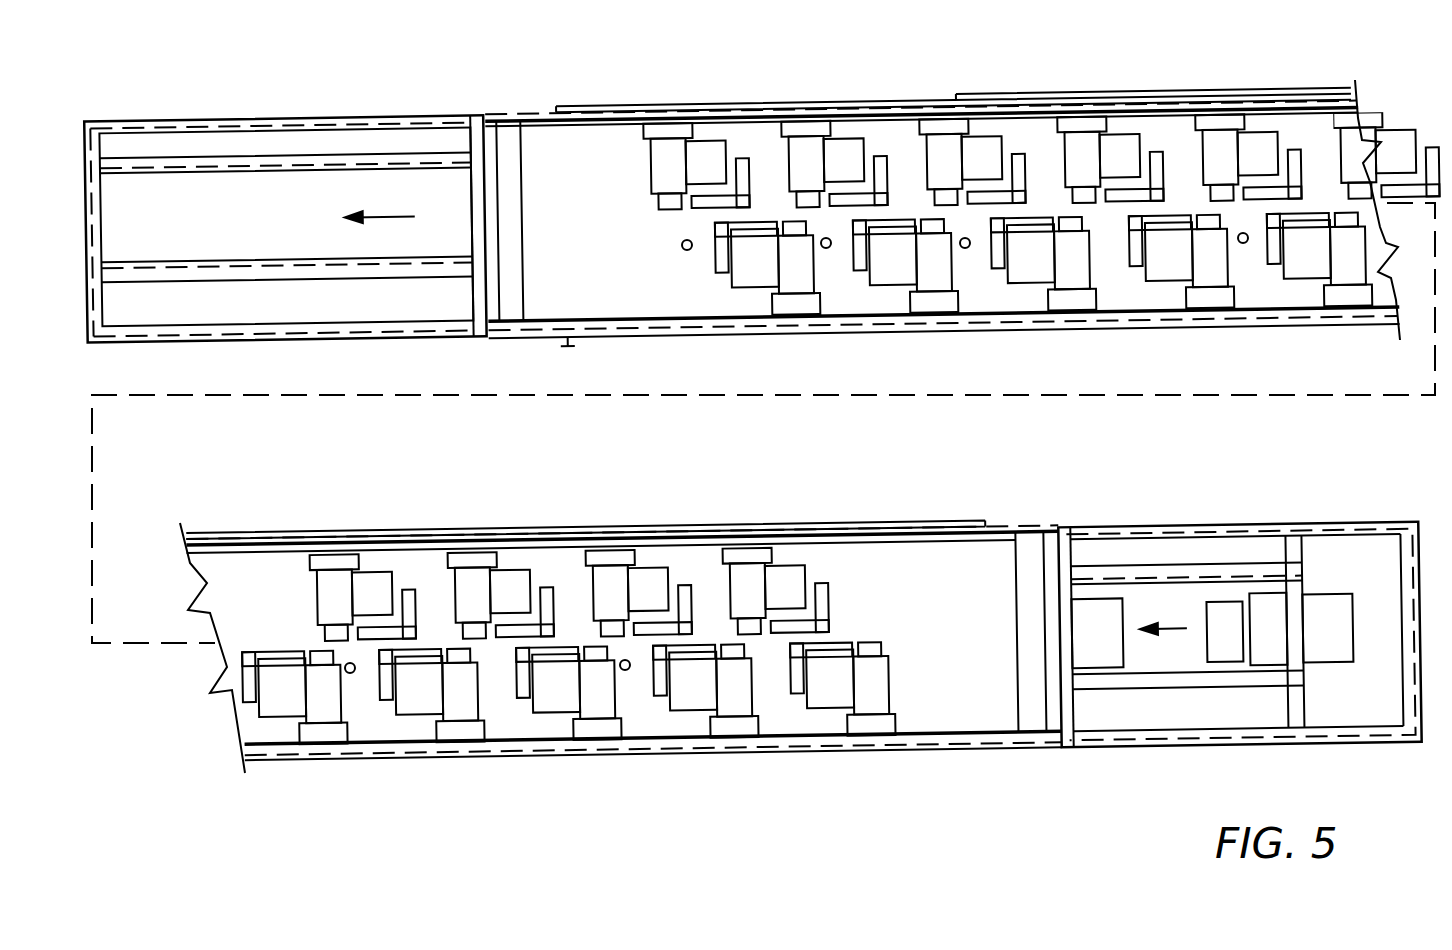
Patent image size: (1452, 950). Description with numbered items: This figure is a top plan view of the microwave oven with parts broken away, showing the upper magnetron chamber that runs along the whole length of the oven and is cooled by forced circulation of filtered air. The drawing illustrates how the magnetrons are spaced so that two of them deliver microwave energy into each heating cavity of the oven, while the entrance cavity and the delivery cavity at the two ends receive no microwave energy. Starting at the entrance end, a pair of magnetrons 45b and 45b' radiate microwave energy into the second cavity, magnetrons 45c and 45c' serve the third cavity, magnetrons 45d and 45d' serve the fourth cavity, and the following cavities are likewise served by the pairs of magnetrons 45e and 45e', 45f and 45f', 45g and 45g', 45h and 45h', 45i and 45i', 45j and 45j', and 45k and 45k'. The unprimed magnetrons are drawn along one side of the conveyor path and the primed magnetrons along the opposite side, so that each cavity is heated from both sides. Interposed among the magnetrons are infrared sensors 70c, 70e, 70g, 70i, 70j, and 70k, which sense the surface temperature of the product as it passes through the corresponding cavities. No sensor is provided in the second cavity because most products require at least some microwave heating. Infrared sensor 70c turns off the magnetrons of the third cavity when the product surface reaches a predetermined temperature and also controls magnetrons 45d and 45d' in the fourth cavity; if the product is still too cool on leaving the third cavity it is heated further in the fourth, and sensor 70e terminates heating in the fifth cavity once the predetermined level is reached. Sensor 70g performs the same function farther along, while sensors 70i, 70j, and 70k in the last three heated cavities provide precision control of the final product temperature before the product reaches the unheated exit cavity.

The magnetron 45b is at (859, 723).
The magnetron 45c is at (729, 725).
The magnetron 45d is at (585, 720).
The magnetron 45e is at (460, 721).
The magnetron 45f is at (310, 734).
The magnetron 45g is at (1340, 289).
The magnetron 45h is at (1181, 291).
The magnetron 45i is at (1058, 292).
The magnetron 45j is at (917, 293).
The magnetron 45k is at (767, 300).
The magnetron 45b' is at (776, 554).
The magnetron 45c' is at (639, 556).
The magnetron 45d' is at (501, 556).
The magnetron 45e' is at (363, 558).
The magnetron 45f' is at (806, 351).
The magnetron 45g' is at (1248, 130).
The magnetron 45h' is at (1110, 131).
The magnetron 45i' is at (972, 132).
The magnetron 45j' is at (834, 133).
The magnetron 45k' is at (696, 134).
The infrared sensor 70c is at (626, 670).
The infrared sensor 70e is at (352, 672).
The infrared sensor 70g is at (1243, 245).
The infrared sensor 70i is at (966, 250).
The infrared sensor 70j is at (826, 250).
The infrared sensor 70k is at (688, 252).